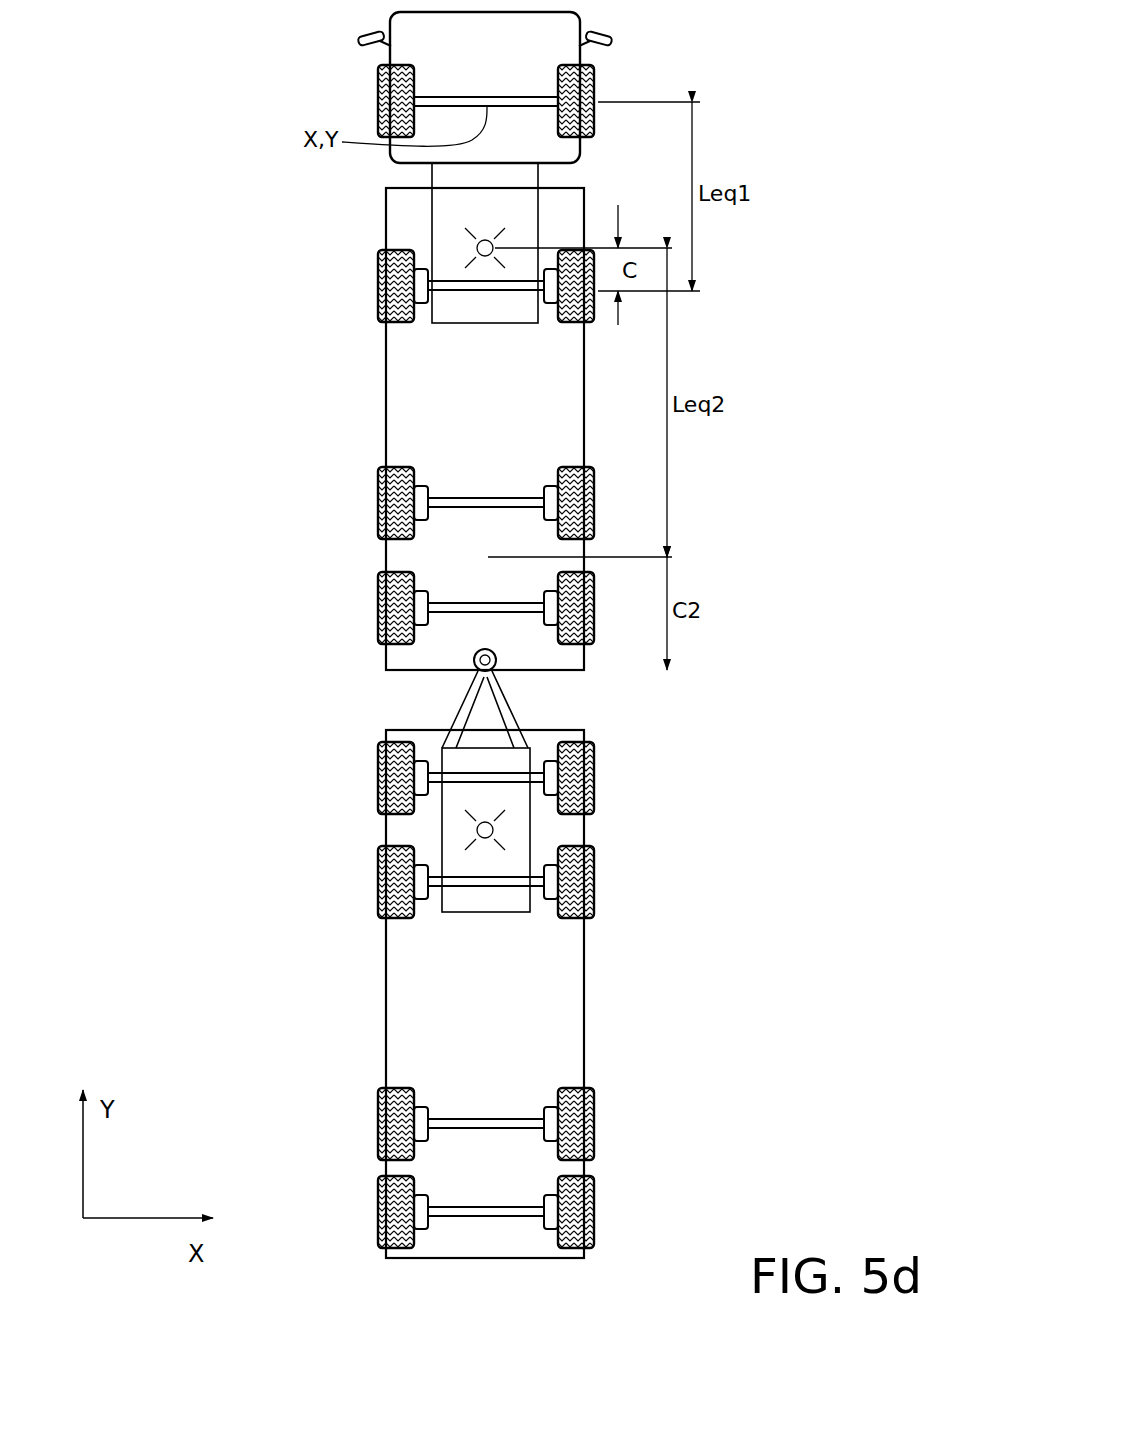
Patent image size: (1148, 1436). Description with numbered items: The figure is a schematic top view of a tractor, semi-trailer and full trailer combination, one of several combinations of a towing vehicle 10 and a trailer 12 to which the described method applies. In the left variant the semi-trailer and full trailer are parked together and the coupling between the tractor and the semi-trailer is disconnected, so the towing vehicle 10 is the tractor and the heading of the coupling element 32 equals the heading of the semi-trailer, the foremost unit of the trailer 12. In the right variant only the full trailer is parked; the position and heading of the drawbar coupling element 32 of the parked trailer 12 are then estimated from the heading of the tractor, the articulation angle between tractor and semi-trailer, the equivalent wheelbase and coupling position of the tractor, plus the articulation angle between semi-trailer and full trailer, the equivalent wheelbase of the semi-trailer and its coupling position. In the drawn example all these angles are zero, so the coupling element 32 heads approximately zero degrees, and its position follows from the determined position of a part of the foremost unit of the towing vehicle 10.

The towing vehicle 10 is at (380, 12).
The trailer 12 is at (378, 188).
The coupling element 32 is at (478, 249).